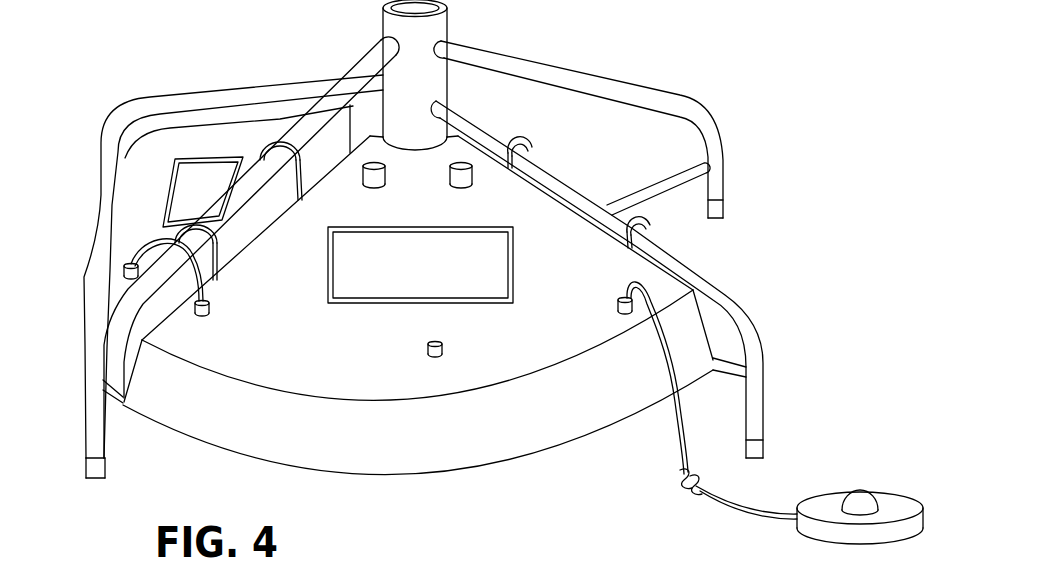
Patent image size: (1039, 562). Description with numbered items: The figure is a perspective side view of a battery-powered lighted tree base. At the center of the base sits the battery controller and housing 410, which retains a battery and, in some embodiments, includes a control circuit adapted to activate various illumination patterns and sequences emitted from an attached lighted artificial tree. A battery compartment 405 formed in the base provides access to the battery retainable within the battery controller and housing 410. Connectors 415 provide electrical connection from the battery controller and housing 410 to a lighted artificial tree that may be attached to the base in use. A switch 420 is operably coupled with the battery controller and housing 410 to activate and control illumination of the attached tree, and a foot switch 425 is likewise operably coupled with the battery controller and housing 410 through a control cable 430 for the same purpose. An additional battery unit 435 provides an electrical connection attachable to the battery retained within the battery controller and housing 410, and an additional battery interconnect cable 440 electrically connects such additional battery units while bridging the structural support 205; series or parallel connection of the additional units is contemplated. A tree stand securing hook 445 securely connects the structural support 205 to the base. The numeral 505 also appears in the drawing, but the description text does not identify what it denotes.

The structural support 205 is at (571, 64).
The battery compartment 405 is at (328, 290).
The battery controller and housing 410 is at (199, 413).
The connectors 415 is at (373, 163).
The switch 420 is at (433, 359).
The foot switch 425 is at (826, 494).
The control cable 430 is at (677, 470).
The additional battery unit 435 is at (157, 163).
The additional battery interconnect cable 440 is at (133, 250).
The tree stand securing hook 445 is at (534, 148).
The support 505 is at (397, 558).